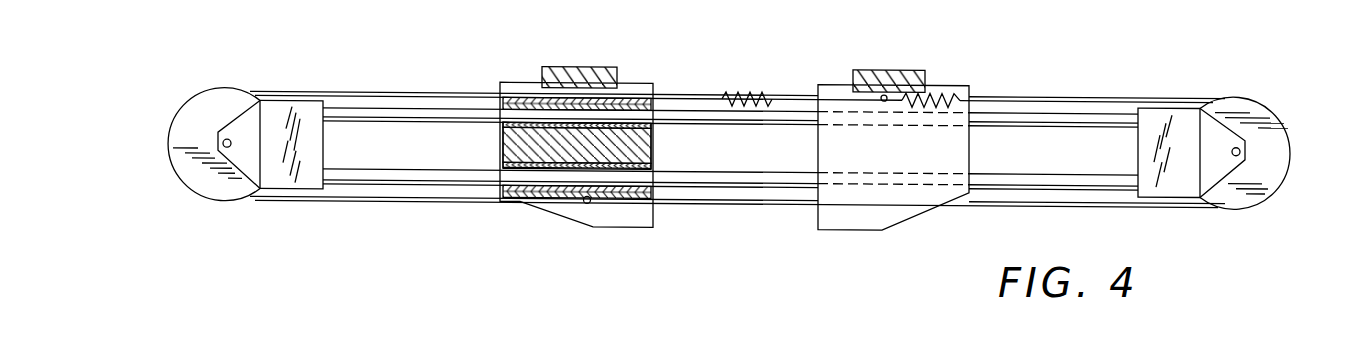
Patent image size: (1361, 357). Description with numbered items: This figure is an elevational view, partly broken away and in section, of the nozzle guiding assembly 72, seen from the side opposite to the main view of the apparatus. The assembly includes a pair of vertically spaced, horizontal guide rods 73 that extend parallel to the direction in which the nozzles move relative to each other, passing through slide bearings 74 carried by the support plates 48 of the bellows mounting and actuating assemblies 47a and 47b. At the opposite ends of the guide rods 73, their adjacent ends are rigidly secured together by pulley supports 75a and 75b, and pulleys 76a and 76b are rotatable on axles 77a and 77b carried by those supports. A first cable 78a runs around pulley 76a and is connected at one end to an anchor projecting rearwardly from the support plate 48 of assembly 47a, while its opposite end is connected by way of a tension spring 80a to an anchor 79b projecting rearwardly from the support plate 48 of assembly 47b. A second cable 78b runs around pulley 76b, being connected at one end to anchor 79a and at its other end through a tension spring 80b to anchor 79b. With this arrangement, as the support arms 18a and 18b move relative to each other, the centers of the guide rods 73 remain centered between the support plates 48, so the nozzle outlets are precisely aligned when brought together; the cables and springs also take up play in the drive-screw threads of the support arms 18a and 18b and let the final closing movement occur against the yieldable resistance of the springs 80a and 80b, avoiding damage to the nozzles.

The nozzle guiding assembly 72 is at (1074, 80).
The guide rods 73 is at (373, 111).
The slide bearings 74 is at (618, 162).
The pulley support 75a is at (278, 177).
The pulley support 75b is at (1177, 176).
The pulley 76a is at (201, 194).
The pulley 76b is at (1257, 199).
The axle 77a is at (224, 140).
The axle 77b is at (1233, 140).
The first cable 78a is at (450, 201).
The second cable 78b is at (1013, 200).
The anchor 79a is at (585, 201).
The anchor 79b is at (884, 97).
The tension spring 80a is at (724, 90).
The tension spring 80b is at (933, 85).
The bellows mounting and actuating assembly 47a is at (633, 217).
The bellows mounting and actuating assembly 47b is at (857, 211).
The support plates 48 is at (498, 156).
The support arm 18a is at (602, 47).
The support arm 18b is at (892, 73).